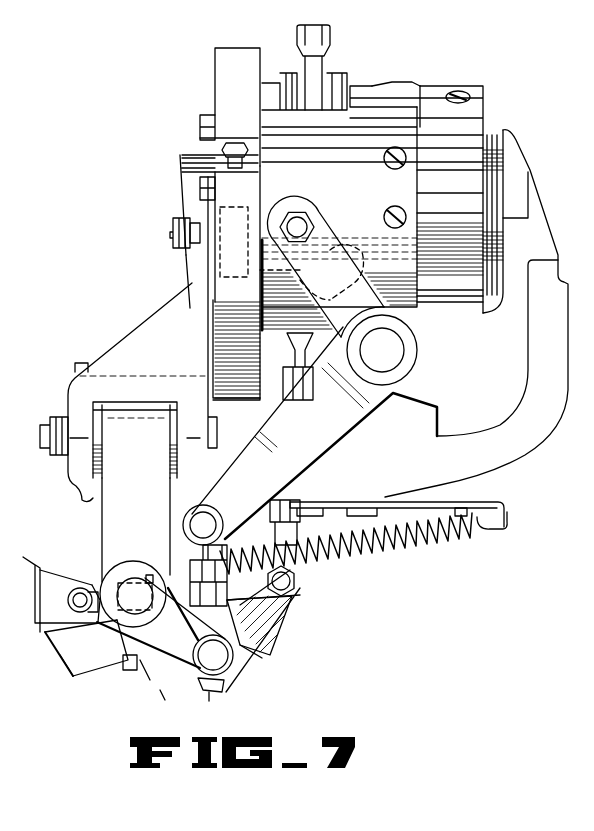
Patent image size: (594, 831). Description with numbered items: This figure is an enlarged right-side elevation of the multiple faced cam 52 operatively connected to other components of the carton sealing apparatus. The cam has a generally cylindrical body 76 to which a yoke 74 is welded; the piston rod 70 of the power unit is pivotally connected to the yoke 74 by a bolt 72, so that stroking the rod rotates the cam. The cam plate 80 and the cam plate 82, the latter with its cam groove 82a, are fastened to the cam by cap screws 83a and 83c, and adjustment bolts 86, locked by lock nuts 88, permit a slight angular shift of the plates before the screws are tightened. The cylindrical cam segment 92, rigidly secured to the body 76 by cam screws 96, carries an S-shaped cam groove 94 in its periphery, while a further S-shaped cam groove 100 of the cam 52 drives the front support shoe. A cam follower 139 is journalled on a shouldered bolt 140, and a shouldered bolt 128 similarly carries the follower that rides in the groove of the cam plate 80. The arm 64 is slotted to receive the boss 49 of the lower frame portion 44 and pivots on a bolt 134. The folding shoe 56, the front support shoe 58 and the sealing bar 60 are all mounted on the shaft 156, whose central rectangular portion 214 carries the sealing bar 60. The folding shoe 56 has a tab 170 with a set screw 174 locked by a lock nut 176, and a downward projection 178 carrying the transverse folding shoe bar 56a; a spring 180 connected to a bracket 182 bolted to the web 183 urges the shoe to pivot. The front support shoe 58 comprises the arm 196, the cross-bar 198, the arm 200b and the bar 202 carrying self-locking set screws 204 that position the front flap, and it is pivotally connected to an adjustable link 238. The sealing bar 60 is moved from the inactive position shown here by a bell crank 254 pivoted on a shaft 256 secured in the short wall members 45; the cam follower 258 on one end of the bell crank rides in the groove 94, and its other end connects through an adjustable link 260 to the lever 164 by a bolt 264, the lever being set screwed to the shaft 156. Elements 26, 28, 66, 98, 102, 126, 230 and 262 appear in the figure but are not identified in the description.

The pawl plate 26 is at (35, 608).
The stop plate 28 is at (46, 548).
The lower frame portion 44 is at (513, 450).
The short wall members 45 is at (417, 380).
The boss 49 is at (147, 447).
The multiple faced cam 52 is at (447, 73).
The folding shoe 56 is at (72, 684).
The folding shoe bar 56a is at (68, 682).
The front support shoe 58 is at (265, 667).
The sealing bar 60 is at (53, 552).
The arm 64 is at (157, 317).
The pawl edge 66 is at (70, 660).
The piston rod 70 is at (330, 37).
The bolt 72 is at (273, 99).
The yoke 74 is at (273, 76).
The cylindrical body 76 is at (467, 224).
The cam plate 80 is at (200, 121).
The cam plate 82 is at (222, 287).
The cam groove 82a is at (207, 269).
The cap screw 83a is at (200, 138).
The cap screw 83c is at (200, 190).
The adjustment bolt 86 is at (182, 172).
The lock nut 88 is at (182, 158).
The cylindrical cam segment 92 is at (335, 196).
The S-shaped cam groove 94 is at (345, 241).
The cam screw 96 is at (400, 207).
The cover 98 is at (462, 84).
The S-shaped cam groove 100 is at (377, 86).
The screw 102 is at (470, 98).
The pawl body 126 is at (35, 585).
The shouldered bolt 128 is at (43, 556).
The bolt 134 is at (42, 437).
The cam follower 139 is at (198, 210).
The shouldered bolt 140 is at (170, 233).
The shaft 156 is at (140, 577).
The lever 164 is at (186, 677).
The tab 170 is at (150, 683).
The set screw 174 is at (133, 667).
The lock nut 176 is at (162, 700).
The projection 178 is at (86, 613).
The spring 180 is at (462, 533).
The bracket 182 is at (458, 492).
The web 183 is at (340, 503).
The arm 196 is at (296, 586).
The cross-bar 198 is at (283, 606).
The arm 200b is at (268, 645).
The bar 202 is at (222, 692).
The self-locking set screw 204 is at (207, 703).
The central rectangular portion 214 is at (115, 574).
The pivot bolt 230 is at (86, 588).
The adjustable link 238 is at (322, 501).
The bell crank 254 is at (327, 437).
The shaft 256 is at (392, 350).
The cam follower 258 is at (322, 218).
The adjustable link 260 is at (225, 625).
The pivot 262 is at (205, 522).
The bolt 264 is at (209, 650).